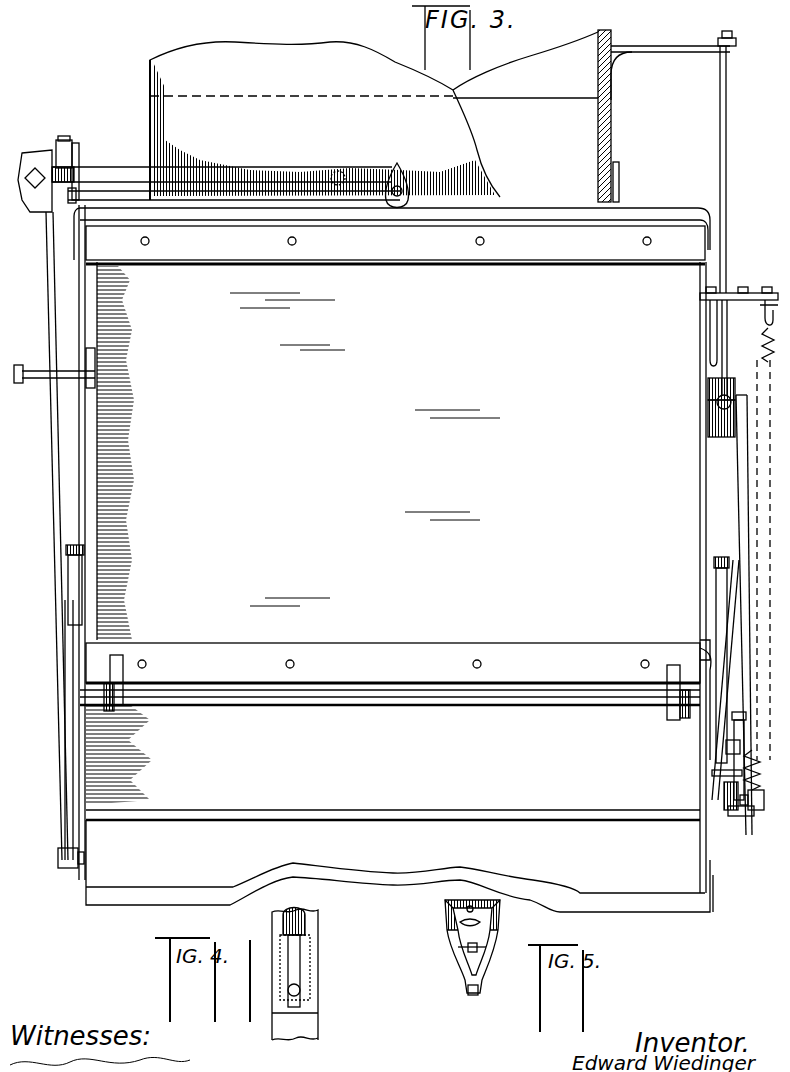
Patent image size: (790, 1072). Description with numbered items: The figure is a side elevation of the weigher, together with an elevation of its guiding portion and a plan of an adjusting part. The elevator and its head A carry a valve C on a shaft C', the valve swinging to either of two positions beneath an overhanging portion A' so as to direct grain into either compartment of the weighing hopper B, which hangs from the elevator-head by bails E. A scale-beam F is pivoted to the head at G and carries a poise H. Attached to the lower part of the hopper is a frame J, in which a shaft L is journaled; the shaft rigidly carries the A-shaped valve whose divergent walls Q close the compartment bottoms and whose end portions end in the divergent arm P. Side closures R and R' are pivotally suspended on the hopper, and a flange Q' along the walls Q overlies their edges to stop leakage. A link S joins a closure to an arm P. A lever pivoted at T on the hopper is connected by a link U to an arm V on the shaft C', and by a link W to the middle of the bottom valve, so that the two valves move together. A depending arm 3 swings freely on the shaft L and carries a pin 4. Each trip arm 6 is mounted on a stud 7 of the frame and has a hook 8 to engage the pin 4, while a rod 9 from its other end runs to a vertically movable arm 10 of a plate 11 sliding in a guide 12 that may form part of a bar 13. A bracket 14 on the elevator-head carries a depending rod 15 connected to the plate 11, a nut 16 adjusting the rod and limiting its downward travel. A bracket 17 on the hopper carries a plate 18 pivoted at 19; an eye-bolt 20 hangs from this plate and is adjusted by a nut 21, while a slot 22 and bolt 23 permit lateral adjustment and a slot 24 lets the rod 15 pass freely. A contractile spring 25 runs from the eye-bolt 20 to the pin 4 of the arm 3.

In FIG. 3, the elevator and its head A is at (374, 116).
In FIG. 3, the overhanging portion A' is at (568, 117).
In FIG. 3, the weighing hopper B is at (401, 577).
In FIG. 3, the valve C is at (374, 117).
In FIG. 3, the shaft C' is at (234, 159).
In FIG. 3, the bails E is at (635, 208).
In FIG. 3, the scale-beam F is at (106, 168).
In FIG. 3, the pivot G is at (362, 175).
In FIG. 3, the poise H is at (30, 150).
In FIG. 3, the frame J is at (440, 643).
In FIG. 3, the shaft L is at (742, 692).
In FIG. 3, the divergent arm P is at (84, 582).
In FIG. 3, the divergent walls Q is at (398, 866).
In FIG. 3, the flange Q' is at (632, 806).
In FIG. 3, the valve or closure R is at (393, 762).
In FIG. 3, the valve or closure R' is at (676, 928).
In FIG. 3, the link S is at (70, 702).
In FIG. 3, the pivot T is at (54, 361).
In FIG. 3, the link U is at (64, 140).
In FIG. 3, the arm V is at (82, 152).
In FIG. 3, the link W is at (70, 870).
In FIG. 3, the depending arm 3 is at (725, 740).
In FIG. 3, the pin 4 is at (750, 805).
In FIG. 3, the arm of trip mechanism 6 is at (724, 800).
In FIG. 3, the stud 7 is at (708, 773).
In FIG. 3, the hook 8 is at (732, 815).
In FIG. 3, the rod 9 is at (736, 505).
In FIG. 3, the vertically movable arm 10 is at (726, 392).
In FIG. 4, the vertically movable arm 10 is at (296, 975).
In FIG. 3, the plate 11 is at (718, 388).
In FIG. 4, the plate 11 is at (302, 925).
In FIG. 3, the guide 12 is at (710, 425).
In FIG. 4, the guide 12 is at (320, 1002).
In FIG. 3, the bar 13 is at (700, 520).
In FIG. 4, the bar 13 is at (320, 1032).
In FIG. 3, the bracket 14 is at (675, 50).
In FIG. 3, the rod 15 is at (730, 116).
In FIG. 5, the rod 15 is at (480, 945).
In FIG. 3, the nut 16 is at (736, 40).
In FIG. 3, the bracket 17 is at (714, 310).
In FIG. 5, the bracket 17 is at (442, 918).
In FIG. 3, the plate 18 is at (718, 292).
In FIG. 5, the plate 18 is at (476, 975).
In FIG. 3, the pivot 19 is at (700, 287).
In FIG. 5, the pivot 19 is at (474, 910).
In FIG. 3, the eye-bolt 20 is at (763, 313).
In FIG. 5, the eye-bolt 20 is at (468, 1012).
In FIG. 3, the nut 21 is at (771, 290).
In FIG. 5, the nut 21 is at (466, 990).
In FIG. 5, the slot 22 is at (462, 955).
In FIG. 3, the bolt 23 is at (745, 290).
In FIG. 5, the bolt 23 is at (478, 952).
In FIG. 5, the slot 24 is at (462, 930).
In FIG. 3, the contractile spring 25 is at (762, 348).